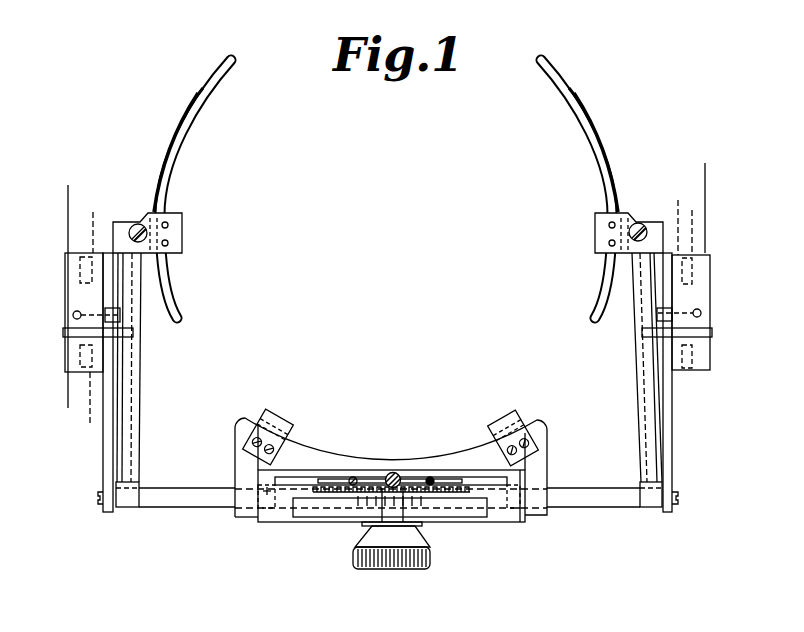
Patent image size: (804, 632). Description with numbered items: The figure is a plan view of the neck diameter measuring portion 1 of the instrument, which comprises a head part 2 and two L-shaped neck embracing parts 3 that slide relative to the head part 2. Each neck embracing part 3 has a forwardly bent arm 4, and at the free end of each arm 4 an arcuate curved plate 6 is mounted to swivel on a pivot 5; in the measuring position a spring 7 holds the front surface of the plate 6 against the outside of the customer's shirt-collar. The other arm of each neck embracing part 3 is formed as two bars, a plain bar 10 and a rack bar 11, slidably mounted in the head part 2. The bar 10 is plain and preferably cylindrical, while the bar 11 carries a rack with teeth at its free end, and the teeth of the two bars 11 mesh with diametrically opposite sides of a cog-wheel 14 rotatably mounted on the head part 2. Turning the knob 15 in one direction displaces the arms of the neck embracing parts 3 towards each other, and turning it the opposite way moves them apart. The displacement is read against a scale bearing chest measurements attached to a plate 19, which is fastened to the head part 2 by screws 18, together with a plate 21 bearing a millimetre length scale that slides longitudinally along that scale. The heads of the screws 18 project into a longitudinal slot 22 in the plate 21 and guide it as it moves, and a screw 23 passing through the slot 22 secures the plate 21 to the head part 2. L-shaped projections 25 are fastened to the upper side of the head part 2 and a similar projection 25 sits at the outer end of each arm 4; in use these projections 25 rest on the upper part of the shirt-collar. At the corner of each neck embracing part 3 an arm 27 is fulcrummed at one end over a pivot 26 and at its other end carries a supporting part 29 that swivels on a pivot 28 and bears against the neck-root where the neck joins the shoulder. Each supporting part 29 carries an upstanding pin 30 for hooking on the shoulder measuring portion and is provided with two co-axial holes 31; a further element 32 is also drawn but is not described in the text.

The neck diameter measuring portion 1 is at (233, 528).
The head part 2 is at (513, 519).
The neck embracing part 3 is at (139, 483).
The forwardly bent arm 4 is at (143, 392).
The pivot 5 is at (134, 224).
The arcuate curved plate 6 is at (172, 185).
The spring 7 is at (162, 178).
The plain bar 10 is at (175, 508).
The rack bar 11 is at (583, 503).
The cog-wheel 14 is at (373, 516).
The knob 15 is at (393, 565).
The screw 18 is at (353, 476).
The plate 19 is at (318, 477).
The plate 21 is at (297, 513).
The longitudinal slot 22 is at (300, 477).
The screw 23 is at (393, 472).
The projection 25 is at (184, 240).
The pivot 26 is at (100, 505).
The arm 27 is at (110, 450).
The pivot 28 is at (388, 273).
The supporting part 29 is at (385, 273).
The upstanding pin 30 is at (77, 311).
The co-axial hole 31 is at (387, 331).
The clamp band 32 is at (384, 379).